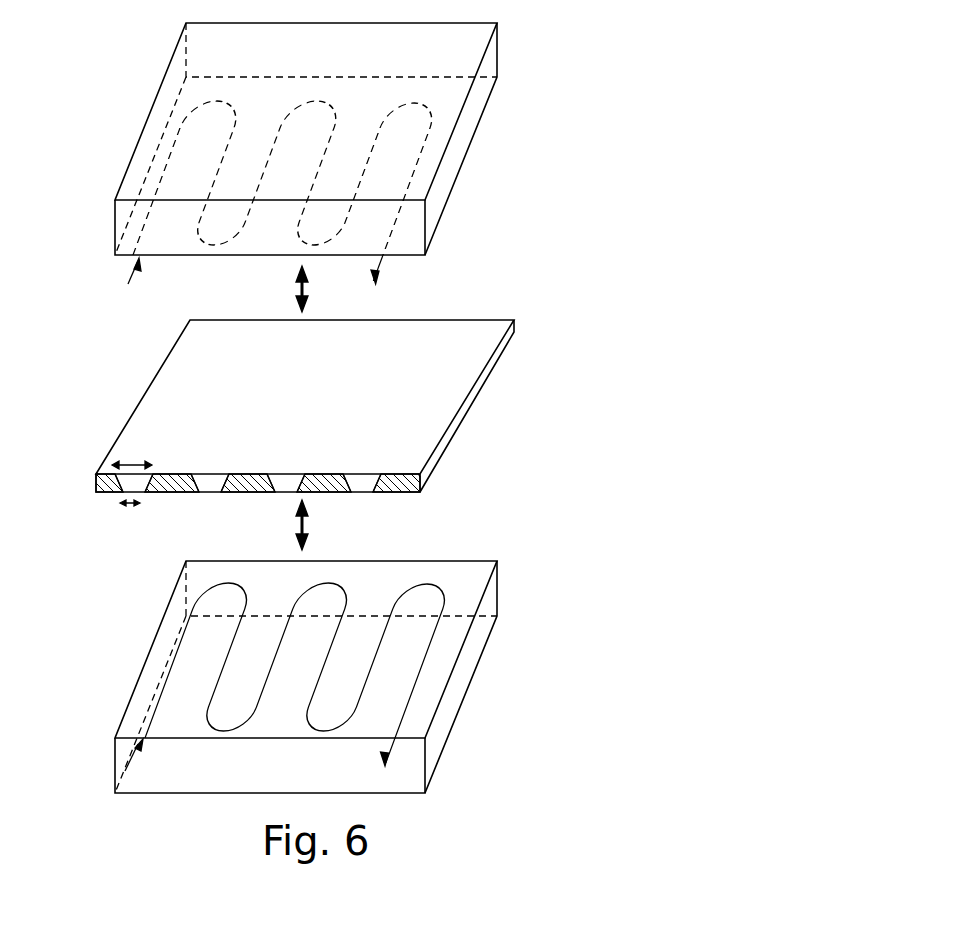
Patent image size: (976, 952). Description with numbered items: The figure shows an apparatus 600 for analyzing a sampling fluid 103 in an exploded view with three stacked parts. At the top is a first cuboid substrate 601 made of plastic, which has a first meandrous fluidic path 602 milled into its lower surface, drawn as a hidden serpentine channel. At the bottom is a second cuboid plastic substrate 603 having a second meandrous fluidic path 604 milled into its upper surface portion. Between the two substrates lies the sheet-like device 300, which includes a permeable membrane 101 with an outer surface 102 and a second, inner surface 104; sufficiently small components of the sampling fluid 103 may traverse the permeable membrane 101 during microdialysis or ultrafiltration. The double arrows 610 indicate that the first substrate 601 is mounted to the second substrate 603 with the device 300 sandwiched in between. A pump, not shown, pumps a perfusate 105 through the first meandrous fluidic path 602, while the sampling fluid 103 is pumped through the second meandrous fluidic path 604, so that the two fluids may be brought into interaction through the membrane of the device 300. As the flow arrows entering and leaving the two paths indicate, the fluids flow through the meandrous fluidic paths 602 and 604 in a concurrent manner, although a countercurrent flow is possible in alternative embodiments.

The apparatus 600 is at (591, 40).
The first cuboid substrate 601 is at (443, 173).
The first meandrous fluidic path 602 is at (320, 101).
The dialysis fluid 105 is at (128, 283).
The arrows 610 is at (296, 290).
The sheet-like device 300 is at (591, 344).
The permeable membrane 101 is at (478, 327).
The inner surface 104 is at (171, 474).
The outer surface 102 is at (171, 493).
The second cuboid plastic substrate 603 is at (466, 668).
The second meandrous fluidic path 604 is at (426, 586).
The sampling fluid 103 is at (128, 762).